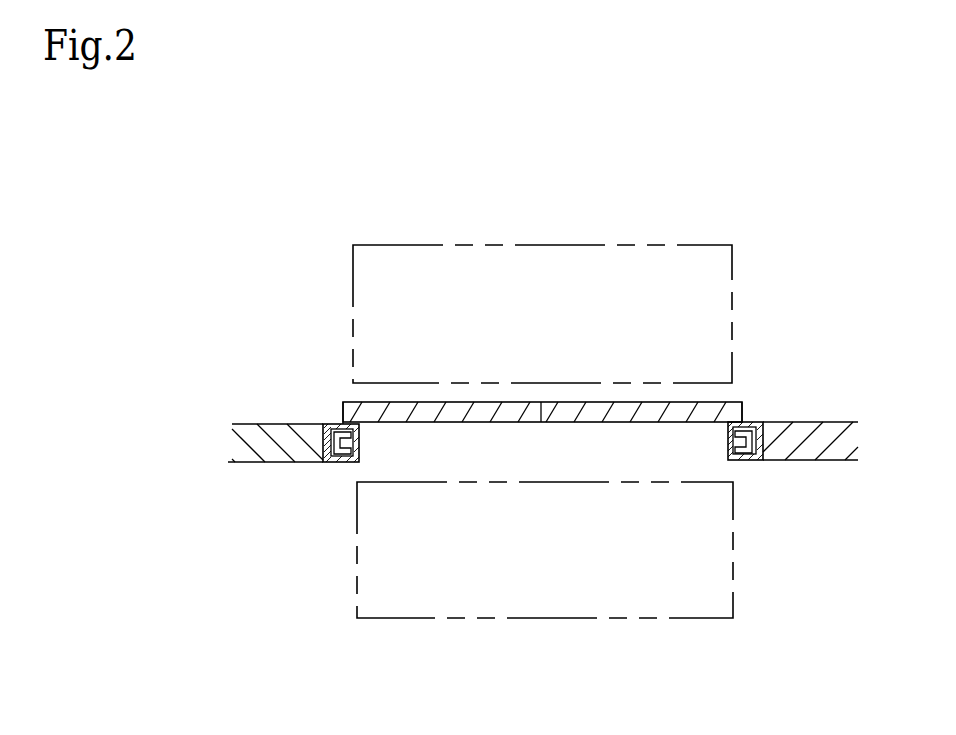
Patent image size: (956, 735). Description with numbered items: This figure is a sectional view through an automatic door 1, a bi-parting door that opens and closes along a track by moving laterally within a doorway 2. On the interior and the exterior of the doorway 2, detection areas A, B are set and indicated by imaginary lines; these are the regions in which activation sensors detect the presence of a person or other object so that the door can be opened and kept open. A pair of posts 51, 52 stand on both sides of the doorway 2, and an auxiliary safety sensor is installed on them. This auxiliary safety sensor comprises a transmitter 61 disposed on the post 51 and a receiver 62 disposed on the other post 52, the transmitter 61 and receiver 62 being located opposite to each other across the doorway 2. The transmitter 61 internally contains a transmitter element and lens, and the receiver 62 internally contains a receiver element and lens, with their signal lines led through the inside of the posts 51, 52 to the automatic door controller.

The automatic door 1 is at (657, 399).
The doorway 2 is at (658, 442).
The post 51 is at (752, 460).
The post 52 is at (339, 463).
The transmitter 61 is at (750, 422).
The receiver 62 is at (343, 422).
The detection area A is at (543, 620).
The detection area B is at (353, 283).